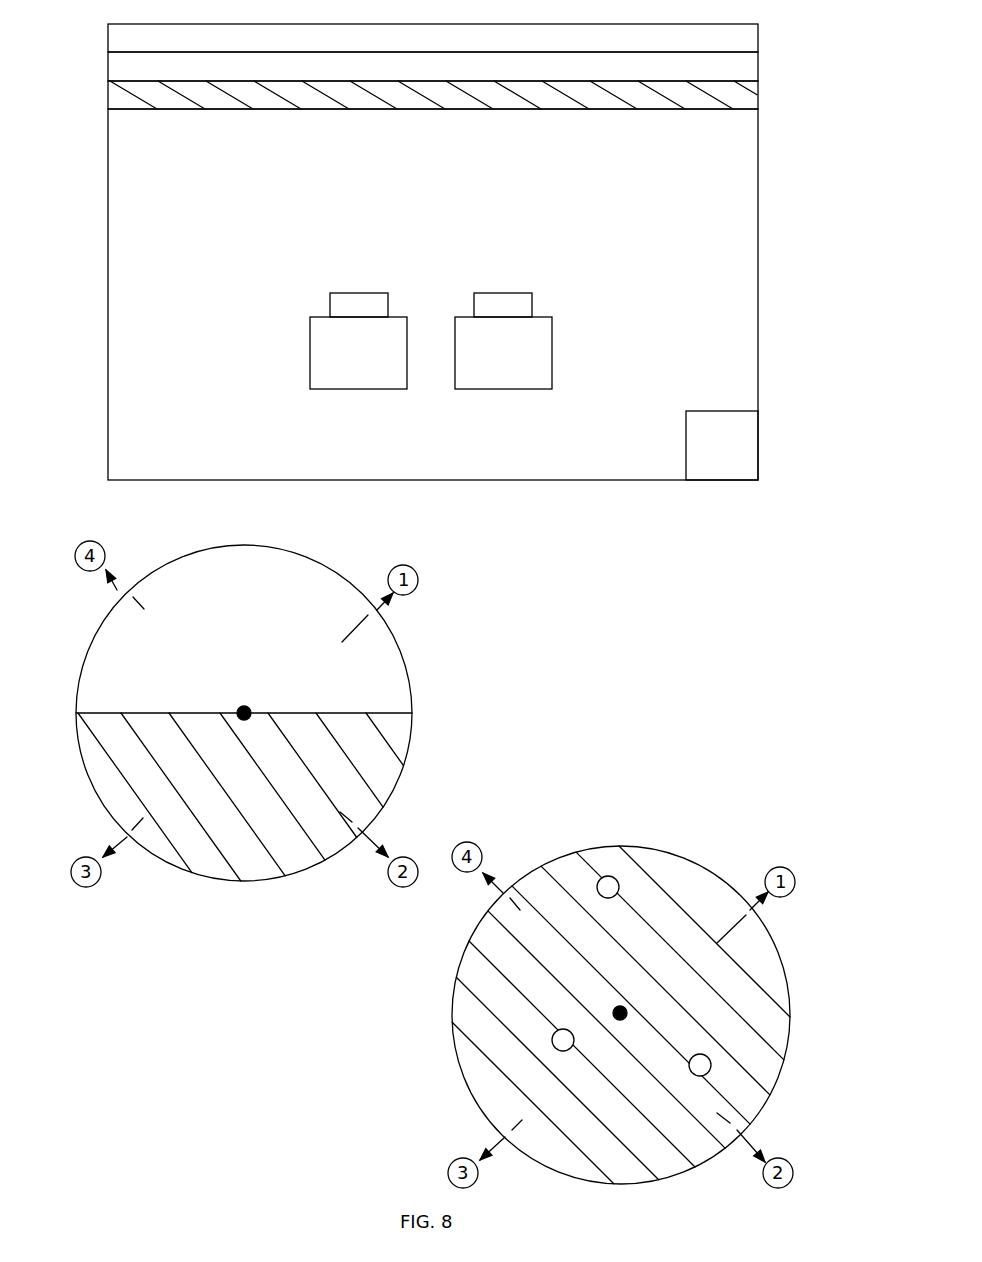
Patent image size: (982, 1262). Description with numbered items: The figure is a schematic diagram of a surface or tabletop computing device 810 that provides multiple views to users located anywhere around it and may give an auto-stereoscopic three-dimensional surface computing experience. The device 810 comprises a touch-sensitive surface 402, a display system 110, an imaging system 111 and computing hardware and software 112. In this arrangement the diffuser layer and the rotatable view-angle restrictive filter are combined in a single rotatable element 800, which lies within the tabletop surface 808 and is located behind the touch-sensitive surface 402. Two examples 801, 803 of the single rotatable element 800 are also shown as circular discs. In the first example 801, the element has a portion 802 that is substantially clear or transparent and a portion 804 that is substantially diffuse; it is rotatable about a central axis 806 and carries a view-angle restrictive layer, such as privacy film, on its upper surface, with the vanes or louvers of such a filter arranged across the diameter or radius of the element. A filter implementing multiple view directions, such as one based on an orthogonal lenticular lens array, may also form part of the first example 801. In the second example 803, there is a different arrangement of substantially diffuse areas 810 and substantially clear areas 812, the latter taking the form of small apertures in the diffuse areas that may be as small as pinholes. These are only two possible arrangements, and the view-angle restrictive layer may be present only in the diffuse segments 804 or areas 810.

The touch-sensitive surface 402 is at (754, 36).
The tabletop surface 808 is at (98, 22).
The single rotatable element 800 is at (756, 86).
The surface or tabletop computing device 810 is at (108, 275).
The imaging system 111 is at (310, 347).
The display system 110 is at (552, 322).
The computing hardware and software 112 is at (748, 450).
The first example of the single rotatable element 801 is at (318, 562).
The substantially clear portion 802 is at (388, 648).
The substantially diffuse portion 804 is at (395, 765).
The central axis 806 is at (250, 706).
The second example of the single rotatable element 803 is at (695, 862).
The substantially clear areas 812 is at (608, 876).